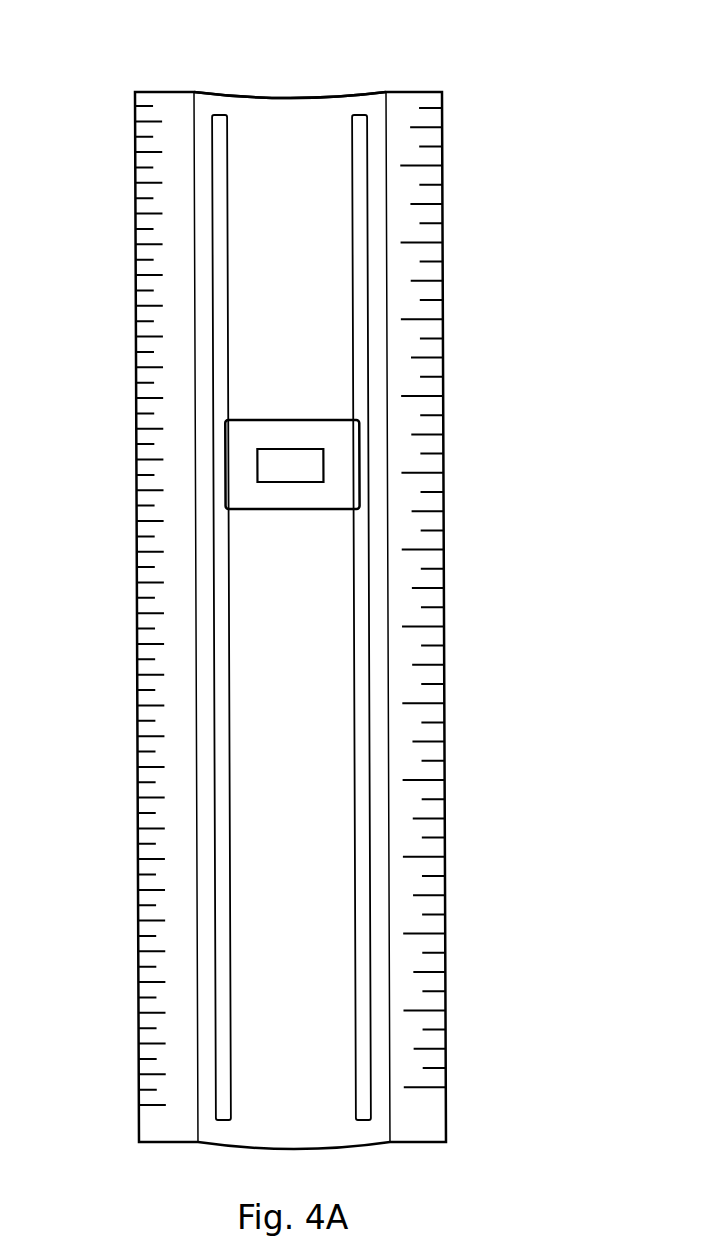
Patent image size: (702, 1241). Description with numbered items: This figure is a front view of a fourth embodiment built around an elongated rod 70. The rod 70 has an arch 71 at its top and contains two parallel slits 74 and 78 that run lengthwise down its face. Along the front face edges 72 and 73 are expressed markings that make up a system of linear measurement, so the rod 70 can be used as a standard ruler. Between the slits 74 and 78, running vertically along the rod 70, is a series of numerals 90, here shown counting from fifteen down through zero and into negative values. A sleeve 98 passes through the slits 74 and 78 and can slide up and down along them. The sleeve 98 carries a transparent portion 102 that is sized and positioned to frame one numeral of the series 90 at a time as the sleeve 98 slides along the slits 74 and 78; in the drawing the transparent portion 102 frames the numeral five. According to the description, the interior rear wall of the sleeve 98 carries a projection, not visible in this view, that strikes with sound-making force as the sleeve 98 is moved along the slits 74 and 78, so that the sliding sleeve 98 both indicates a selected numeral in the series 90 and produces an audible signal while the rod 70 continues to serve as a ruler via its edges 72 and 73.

The rod 70 is at (458, 767).
The arch 71 is at (270, 98).
The front face edge 72 is at (148, 548).
The front face edge 73 is at (438, 623).
The slit 74 is at (220, 1002).
The slit 78 is at (367, 1027).
The series of numerals 90 is at (307, 312).
The sleeve 98 is at (360, 487).
The transparent portion 102 is at (308, 462).